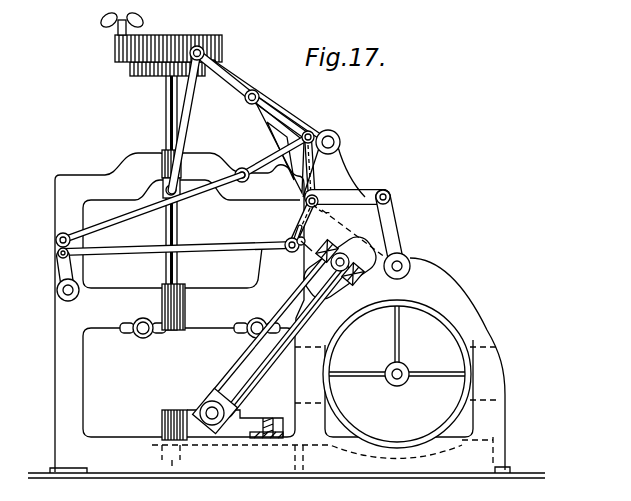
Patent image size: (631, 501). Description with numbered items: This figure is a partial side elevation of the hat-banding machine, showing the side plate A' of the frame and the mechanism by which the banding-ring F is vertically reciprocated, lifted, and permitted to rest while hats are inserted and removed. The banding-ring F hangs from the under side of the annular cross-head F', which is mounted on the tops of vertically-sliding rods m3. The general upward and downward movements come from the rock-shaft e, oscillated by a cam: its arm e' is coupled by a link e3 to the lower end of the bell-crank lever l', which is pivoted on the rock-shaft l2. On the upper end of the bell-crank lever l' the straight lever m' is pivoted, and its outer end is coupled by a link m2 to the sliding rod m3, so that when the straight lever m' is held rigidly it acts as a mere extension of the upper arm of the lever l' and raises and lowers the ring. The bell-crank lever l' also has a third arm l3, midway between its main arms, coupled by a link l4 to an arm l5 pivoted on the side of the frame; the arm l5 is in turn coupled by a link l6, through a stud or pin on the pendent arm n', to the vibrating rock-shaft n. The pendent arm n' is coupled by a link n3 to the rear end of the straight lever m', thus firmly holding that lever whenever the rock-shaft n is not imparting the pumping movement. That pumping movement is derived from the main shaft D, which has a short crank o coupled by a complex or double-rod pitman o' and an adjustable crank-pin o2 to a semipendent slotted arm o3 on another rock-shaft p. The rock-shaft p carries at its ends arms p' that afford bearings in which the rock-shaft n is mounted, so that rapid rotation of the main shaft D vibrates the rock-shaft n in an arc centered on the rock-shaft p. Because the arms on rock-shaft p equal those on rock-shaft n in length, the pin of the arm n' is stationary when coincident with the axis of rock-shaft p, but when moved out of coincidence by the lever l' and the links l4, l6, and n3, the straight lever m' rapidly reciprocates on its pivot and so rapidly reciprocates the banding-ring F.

The annular cross-head F' is at (160, 36).
The banding-ring F is at (151, 79).
The straight lever m' is at (252, 95).
The vertically-sliding rod m3 is at (164, 196).
The link m2 is at (192, 118).
The bell-crank lever l' is at (269, 101).
The rock-shaft l2 is at (333, 139).
The third arm l3 is at (271, 159).
The link l4 is at (149, 211).
The arm l5 is at (64, 262).
The link l6 is at (177, 237).
The link n3 is at (300, 196).
The arm p' is at (284, 224).
The rock-shaft p is at (274, 235).
The vibrating rock-shaft n is at (329, 215).
The pendent arm n' is at (310, 236).
The link e3 is at (357, 196).
The arm e' is at (392, 228).
The rock-shaft e is at (410, 262).
The adjustable crank-pin o2 is at (348, 251).
The semipendent slotted arm o3 is at (343, 267).
The double-rod pitman o' is at (276, 334).
The short crank o is at (225, 410).
The main shaft D is at (205, 404).
The side plate A' is at (286, 315).